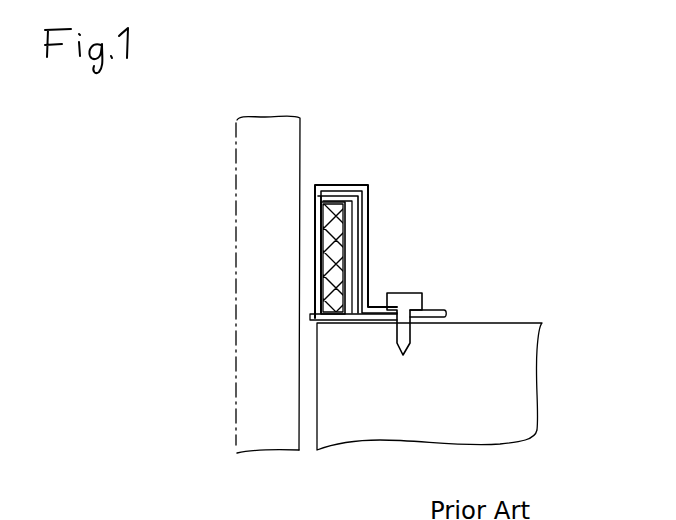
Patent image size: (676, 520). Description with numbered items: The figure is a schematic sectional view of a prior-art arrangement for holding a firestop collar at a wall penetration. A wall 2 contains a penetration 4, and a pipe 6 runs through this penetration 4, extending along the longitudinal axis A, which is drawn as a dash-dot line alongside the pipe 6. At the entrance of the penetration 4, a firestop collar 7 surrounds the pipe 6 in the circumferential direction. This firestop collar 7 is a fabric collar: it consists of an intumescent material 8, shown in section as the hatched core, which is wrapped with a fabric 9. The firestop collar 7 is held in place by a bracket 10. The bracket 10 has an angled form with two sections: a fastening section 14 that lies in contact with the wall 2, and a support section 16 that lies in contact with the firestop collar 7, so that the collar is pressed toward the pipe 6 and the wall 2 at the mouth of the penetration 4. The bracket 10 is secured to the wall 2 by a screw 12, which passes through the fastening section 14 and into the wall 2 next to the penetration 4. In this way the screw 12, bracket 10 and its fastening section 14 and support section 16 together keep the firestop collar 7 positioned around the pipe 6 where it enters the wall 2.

The wall 2 is at (505, 345).
The penetration 4 is at (310, 423).
The pipe 6 is at (292, 142).
The firestop collar 7 is at (366, 247).
The intumescent material 8 is at (372, 212).
The fabric 9 is at (337, 195).
The bracket 10 is at (400, 161).
The screw 12 is at (412, 290).
The fastening section 14 is at (437, 303).
The support section 16 is at (371, 245).
The longitudinal axis A is at (233, 293).